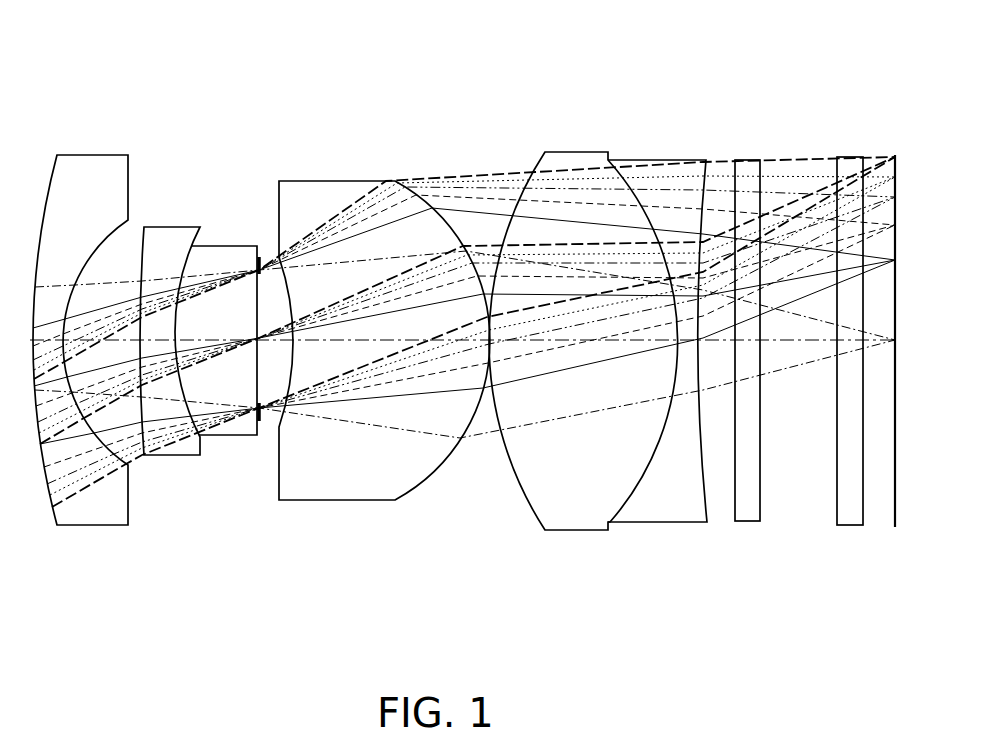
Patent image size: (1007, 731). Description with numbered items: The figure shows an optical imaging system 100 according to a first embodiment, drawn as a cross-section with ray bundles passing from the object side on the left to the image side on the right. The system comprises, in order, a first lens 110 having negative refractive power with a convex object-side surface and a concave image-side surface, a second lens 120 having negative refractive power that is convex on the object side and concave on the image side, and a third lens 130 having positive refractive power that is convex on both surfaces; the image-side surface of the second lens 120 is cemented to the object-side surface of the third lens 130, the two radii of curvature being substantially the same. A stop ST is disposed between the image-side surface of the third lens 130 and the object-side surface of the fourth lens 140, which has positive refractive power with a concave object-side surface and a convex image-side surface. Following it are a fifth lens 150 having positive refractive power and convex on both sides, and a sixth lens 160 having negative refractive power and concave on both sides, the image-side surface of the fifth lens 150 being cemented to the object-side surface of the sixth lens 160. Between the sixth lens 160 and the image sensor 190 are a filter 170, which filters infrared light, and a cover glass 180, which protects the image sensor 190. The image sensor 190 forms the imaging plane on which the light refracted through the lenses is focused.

The optical imaging system 100 is at (482, 118).
The first lens 110 is at (95, 518).
The second lens 120 is at (167, 480).
The third lens 130 is at (230, 438).
The stop ST is at (259, 258).
The fourth lens 140 is at (347, 492).
The fifth lens 150 is at (560, 522).
The sixth lens 160 is at (663, 512).
The filter 170 is at (752, 513).
The cover glass 180 is at (852, 515).
The image sensor 190 is at (893, 518).